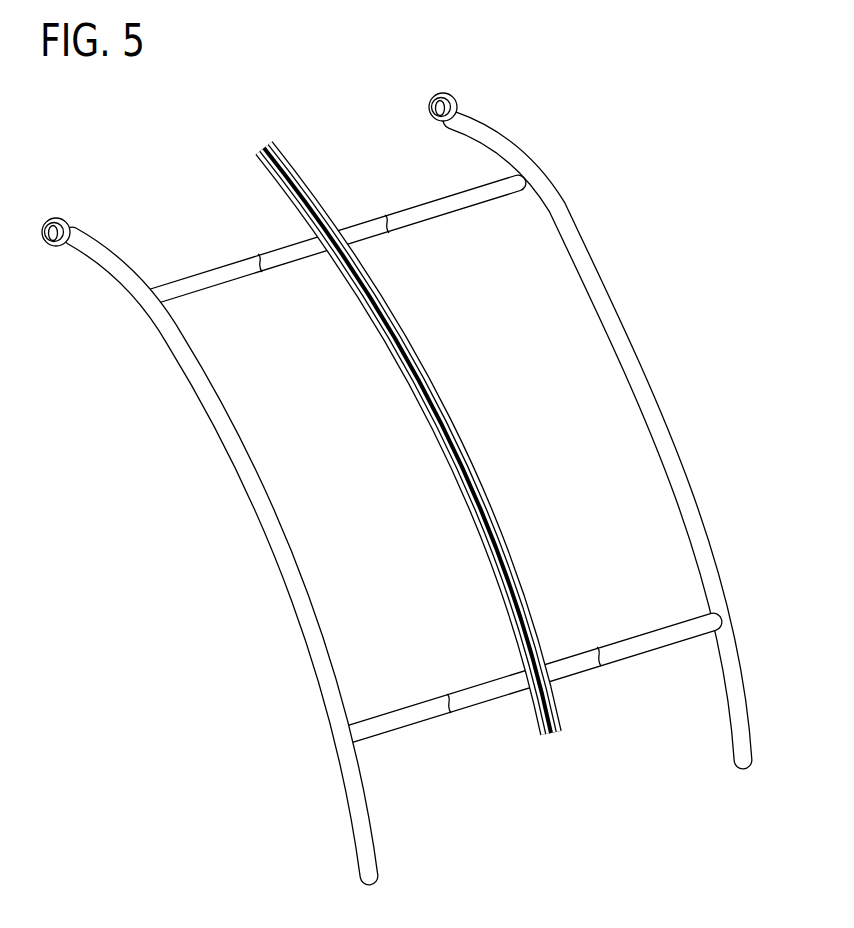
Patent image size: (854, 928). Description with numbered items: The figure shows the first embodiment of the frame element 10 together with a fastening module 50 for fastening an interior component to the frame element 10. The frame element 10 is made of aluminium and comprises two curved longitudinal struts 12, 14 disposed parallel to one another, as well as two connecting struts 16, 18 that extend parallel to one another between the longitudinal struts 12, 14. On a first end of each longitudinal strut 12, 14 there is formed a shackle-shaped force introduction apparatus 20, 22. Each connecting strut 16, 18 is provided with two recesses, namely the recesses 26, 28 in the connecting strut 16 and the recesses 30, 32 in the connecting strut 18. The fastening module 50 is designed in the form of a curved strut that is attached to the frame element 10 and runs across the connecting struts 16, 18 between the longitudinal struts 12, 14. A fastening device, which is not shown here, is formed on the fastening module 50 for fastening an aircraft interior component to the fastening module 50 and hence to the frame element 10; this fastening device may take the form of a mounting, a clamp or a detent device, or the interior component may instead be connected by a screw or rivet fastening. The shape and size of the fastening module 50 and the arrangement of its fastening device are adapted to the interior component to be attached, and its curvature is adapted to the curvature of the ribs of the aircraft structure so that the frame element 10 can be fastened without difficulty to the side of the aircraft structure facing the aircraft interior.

The frame element 10 is at (392, 453).
The longitudinal strut 12 is at (116, 257).
The longitudinal strut 14 is at (598, 272).
The connecting strut 16 is at (460, 200).
The connecting strut 18 is at (642, 636).
The force introduction apparatus 20 is at (54, 218).
The force introduction apparatus 22 is at (453, 92).
The recess 26 is at (269, 273).
The recess 28 is at (398, 240).
The recess 30 is at (458, 714).
The recess 32 is at (598, 668).
The fastening module 50 is at (457, 430).